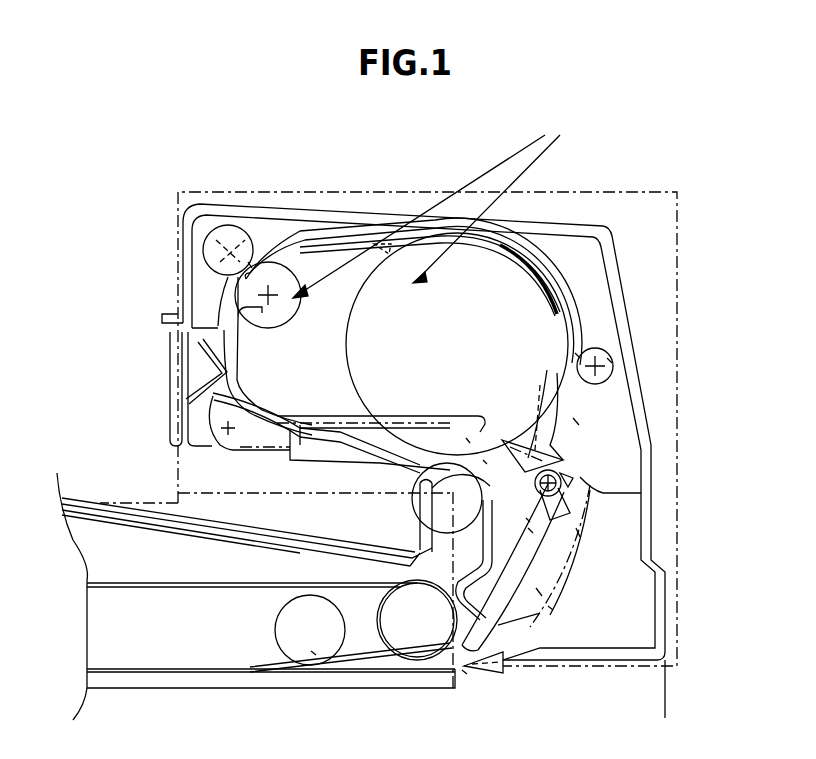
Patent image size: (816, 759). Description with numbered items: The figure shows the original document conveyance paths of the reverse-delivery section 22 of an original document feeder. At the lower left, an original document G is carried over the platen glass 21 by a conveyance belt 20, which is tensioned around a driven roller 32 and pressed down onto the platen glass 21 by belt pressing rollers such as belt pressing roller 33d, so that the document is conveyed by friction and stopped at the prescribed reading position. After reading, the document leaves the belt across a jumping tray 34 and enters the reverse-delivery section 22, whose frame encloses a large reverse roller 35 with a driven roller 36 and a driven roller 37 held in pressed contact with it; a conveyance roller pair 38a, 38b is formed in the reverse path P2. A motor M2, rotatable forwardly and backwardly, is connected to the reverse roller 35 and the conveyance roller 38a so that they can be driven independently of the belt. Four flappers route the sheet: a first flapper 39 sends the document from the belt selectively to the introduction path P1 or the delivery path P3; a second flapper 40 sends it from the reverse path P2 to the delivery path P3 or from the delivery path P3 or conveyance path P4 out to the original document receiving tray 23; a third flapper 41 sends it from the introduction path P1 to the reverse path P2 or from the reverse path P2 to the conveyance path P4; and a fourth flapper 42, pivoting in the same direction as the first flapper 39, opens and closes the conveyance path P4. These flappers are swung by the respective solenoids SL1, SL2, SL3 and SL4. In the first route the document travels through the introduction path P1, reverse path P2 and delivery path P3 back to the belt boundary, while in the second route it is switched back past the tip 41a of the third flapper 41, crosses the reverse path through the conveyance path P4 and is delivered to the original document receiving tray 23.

The conveyance belt 20 is at (112, 582).
The platen glass 21 is at (113, 682).
The reverse-delivery section 22 is at (681, 611).
The original document receiving tray 23 is at (84, 540).
The driven roller 32 is at (432, 637).
The belt pressing roller 33d is at (303, 647).
The jumping tray 34 is at (490, 676).
The reverse roller 35 is at (368, 283).
The driven roller 36 is at (443, 512).
The driven roller 37 is at (622, 353).
The conveyance roller 38a is at (280, 262).
The conveyance roller 38b is at (216, 258).
The first flapper 39 is at (550, 617).
The second flapper 40 is at (320, 440).
The third flapper 41 is at (553, 407).
The tip of the flapper 41a is at (556, 376).
The fourth flapper 42 is at (527, 456).
The original document G is at (282, 530).
The motor M2 is at (436, 206).
The introduction path P1 is at (578, 532).
The reverse path P2 is at (362, 240).
The delivery path P3 is at (530, 530).
The conveyance path P4 is at (480, 424).
The solenoid SL1 is at (537, 592).
The solenoid SL2 is at (214, 411).
The solenoid SL3 is at (574, 421).
The solenoid SL4 is at (559, 473).